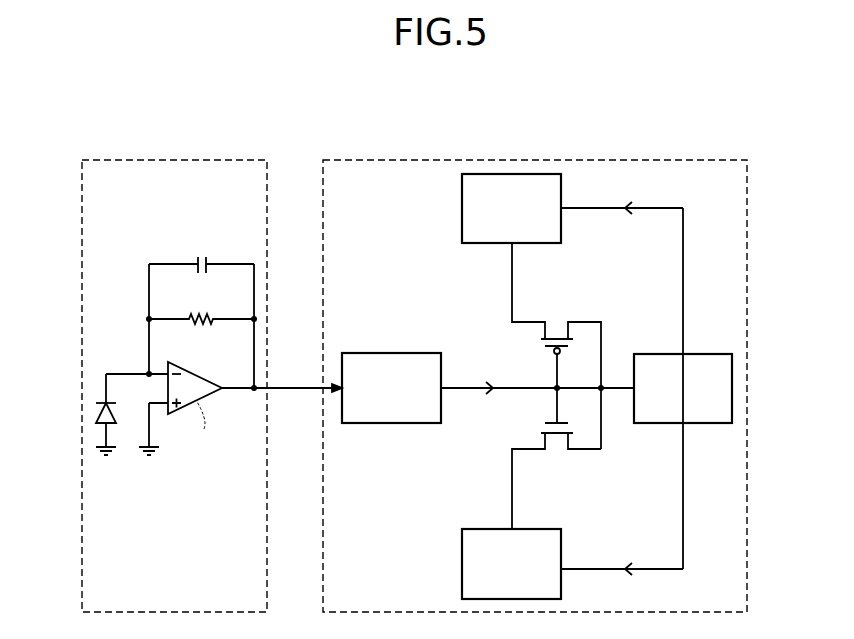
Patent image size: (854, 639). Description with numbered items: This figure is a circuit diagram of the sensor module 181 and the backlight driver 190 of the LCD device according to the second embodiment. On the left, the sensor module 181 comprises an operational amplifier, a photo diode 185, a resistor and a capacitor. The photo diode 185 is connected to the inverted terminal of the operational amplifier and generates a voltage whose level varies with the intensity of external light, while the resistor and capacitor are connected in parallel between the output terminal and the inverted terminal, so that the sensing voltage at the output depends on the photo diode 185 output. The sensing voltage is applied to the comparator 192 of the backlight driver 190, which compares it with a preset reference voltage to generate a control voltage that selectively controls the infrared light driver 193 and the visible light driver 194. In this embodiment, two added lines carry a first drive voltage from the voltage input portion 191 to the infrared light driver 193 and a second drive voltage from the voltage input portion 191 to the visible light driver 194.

The sensor module 181 is at (175, 160).
The photo diode 185 is at (96, 410).
The backlight driver 190 is at (632, 160).
The voltage input portion 191 is at (732, 388).
The comparator 192 is at (392, 353).
The infrared light driver 193 is at (462, 208).
The visible light driver 194 is at (462, 565).